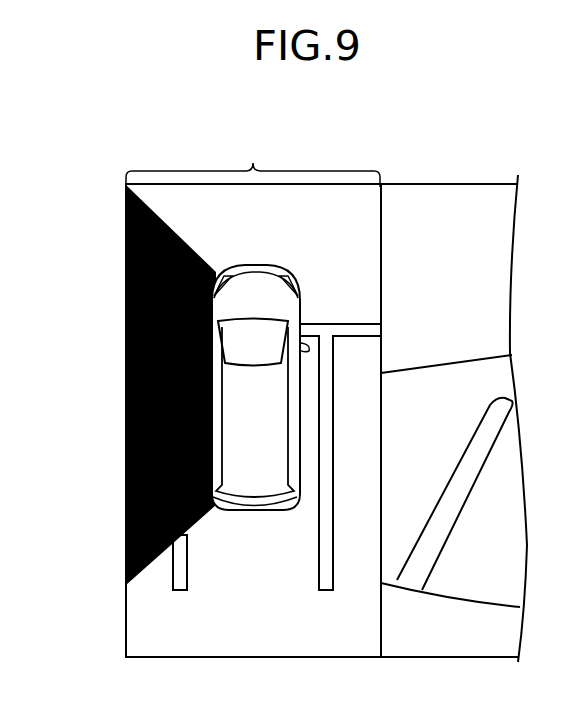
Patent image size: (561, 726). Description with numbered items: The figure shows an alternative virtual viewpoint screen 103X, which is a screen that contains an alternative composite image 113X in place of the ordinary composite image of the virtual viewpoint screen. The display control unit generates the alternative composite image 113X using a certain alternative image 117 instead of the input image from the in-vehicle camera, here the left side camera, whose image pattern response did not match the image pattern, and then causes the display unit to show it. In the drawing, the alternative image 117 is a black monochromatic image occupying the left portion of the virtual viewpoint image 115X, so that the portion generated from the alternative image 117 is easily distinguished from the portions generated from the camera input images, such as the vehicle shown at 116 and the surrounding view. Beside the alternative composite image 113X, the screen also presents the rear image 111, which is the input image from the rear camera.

The alternative virtual viewpoint screen 103X is at (95, 152).
The alternative composite image 113X is at (322, 162).
The rear image 111 is at (440, 170).
The alternative image 117 is at (126, 380).
The vehicle icon 116 is at (253, 462).
The virtual viewpoint image 115X is at (300, 620).